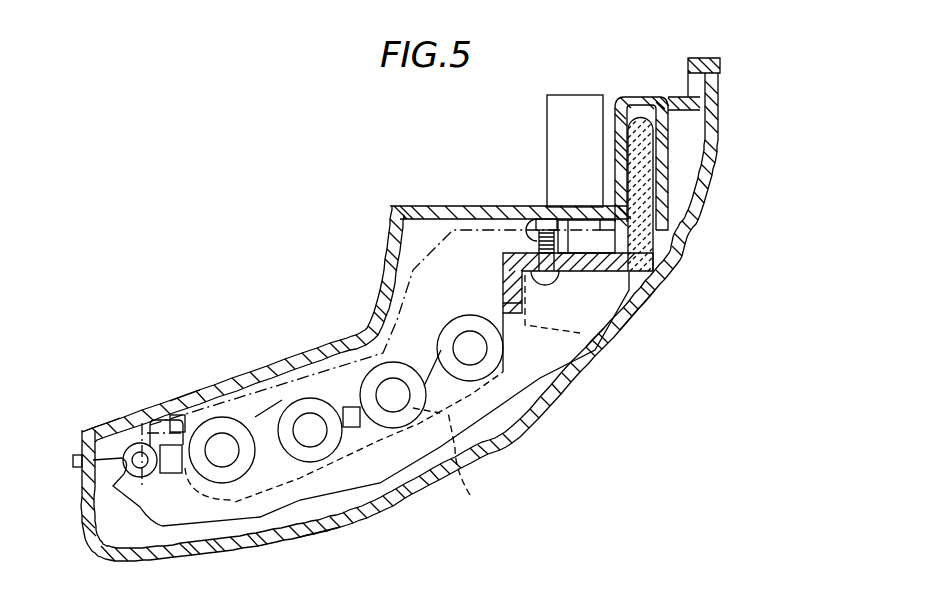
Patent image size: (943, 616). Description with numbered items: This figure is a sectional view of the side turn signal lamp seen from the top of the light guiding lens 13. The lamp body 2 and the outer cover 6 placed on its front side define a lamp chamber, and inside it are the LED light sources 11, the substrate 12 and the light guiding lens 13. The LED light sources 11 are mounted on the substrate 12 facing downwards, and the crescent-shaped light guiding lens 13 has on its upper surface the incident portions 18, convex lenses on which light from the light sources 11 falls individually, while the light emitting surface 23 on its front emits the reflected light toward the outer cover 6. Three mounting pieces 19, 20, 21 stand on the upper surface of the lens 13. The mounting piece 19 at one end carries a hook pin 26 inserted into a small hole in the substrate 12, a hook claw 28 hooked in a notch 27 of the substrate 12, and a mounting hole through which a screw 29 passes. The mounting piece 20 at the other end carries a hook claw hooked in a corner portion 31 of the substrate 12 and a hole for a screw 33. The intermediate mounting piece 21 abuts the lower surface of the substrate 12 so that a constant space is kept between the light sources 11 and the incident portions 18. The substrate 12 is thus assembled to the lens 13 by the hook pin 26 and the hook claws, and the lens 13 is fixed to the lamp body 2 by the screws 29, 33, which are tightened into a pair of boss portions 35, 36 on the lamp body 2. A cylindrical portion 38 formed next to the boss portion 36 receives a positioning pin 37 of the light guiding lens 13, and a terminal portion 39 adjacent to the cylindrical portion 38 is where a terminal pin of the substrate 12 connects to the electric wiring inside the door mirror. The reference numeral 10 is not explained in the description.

The lamp body 2 is at (424, 206).
The outer cover 6 is at (535, 425).
The reflector 10 is at (408, 264).
The LED light source 11 is at (408, 362).
The substrate 12 is at (470, 466).
The light guiding lens 13 is at (322, 492).
The incident portion 18 is at (461, 316).
The mounting piece 19 is at (80, 478).
The mounting piece 20 is at (645, 300).
The mounting piece 21 is at (362, 441).
The light emitting surface 23 is at (400, 470).
The hook pin 26 is at (108, 431).
The notch 27 is at (195, 493).
The hook claw 28 is at (175, 422).
The screw 29 is at (145, 494).
The corner portion 31 is at (595, 360).
The screw 33 is at (547, 282).
The boss portion 35 is at (185, 395).
The boss portion 36 is at (530, 232).
The positioning pin 37 is at (640, 118).
The cylindrical portion 38 is at (668, 186).
The terminal portion 39 is at (548, 128).